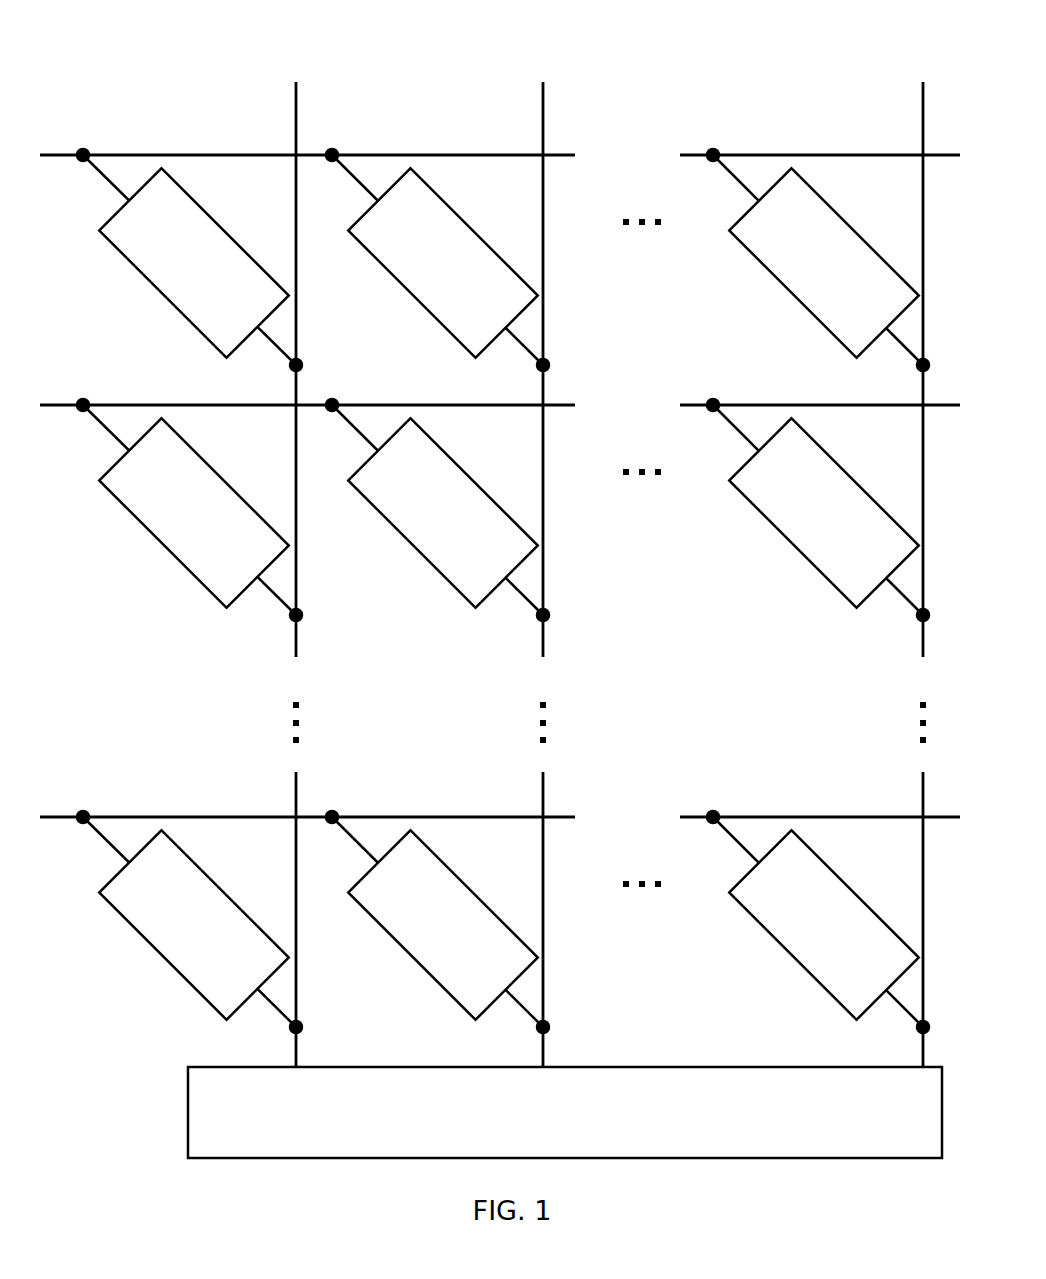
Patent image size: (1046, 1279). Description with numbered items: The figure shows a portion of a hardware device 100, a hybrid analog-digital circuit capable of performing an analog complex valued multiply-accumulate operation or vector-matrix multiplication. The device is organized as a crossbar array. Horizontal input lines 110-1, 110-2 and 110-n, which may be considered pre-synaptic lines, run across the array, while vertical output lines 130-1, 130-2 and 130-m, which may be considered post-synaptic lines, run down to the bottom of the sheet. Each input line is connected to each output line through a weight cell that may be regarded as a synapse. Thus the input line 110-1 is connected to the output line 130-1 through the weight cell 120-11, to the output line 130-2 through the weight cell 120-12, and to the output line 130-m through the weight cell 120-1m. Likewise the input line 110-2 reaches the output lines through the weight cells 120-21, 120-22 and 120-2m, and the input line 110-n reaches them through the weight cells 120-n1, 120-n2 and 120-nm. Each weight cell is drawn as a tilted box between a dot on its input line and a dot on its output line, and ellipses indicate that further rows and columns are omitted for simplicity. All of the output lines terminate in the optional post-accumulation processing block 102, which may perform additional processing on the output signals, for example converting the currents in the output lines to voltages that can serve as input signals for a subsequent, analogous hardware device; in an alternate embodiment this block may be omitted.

The hardware device 100 is at (535, 24).
The post-accumulation processing block 102 is at (565, 1112).
The input line 110-1 is at (165, 155).
The input line 110-2 is at (165, 405).
The input line 110-n is at (165, 817).
The weight cell 120-11 is at (128, 262).
The weight cell 120-12 is at (383, 266).
The weight cell 120-1m is at (752, 255).
The weight cell 120-21 is at (162, 544).
The weight cell 120-22 is at (410, 548).
The weight cell 120-2m is at (789, 542).
The weight cell 120-n1 is at (160, 954).
The weight cell 120-n2 is at (407, 954).
The weight cell 120-nm is at (787, 954).
The output line 130-1 is at (296, 138).
The output line 130-2 is at (543, 138).
The output line 130-m is at (923, 138).